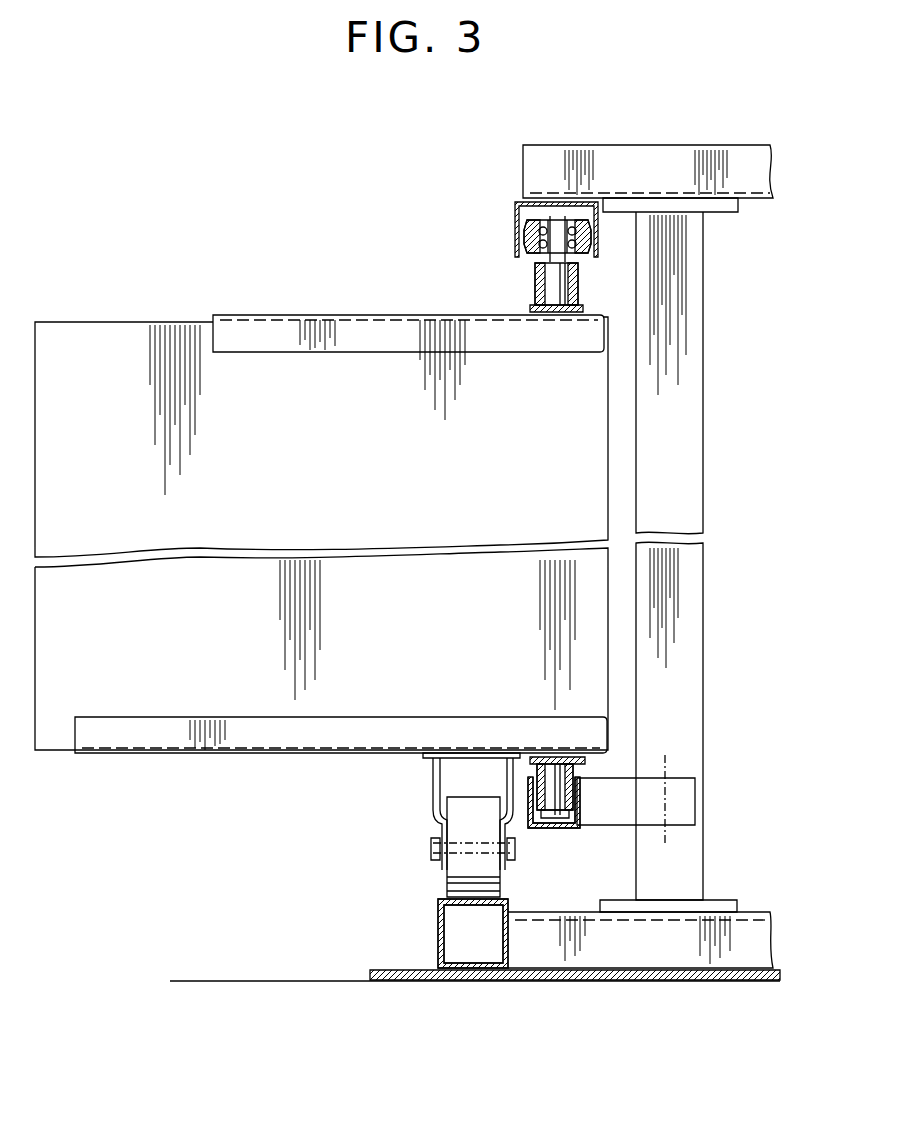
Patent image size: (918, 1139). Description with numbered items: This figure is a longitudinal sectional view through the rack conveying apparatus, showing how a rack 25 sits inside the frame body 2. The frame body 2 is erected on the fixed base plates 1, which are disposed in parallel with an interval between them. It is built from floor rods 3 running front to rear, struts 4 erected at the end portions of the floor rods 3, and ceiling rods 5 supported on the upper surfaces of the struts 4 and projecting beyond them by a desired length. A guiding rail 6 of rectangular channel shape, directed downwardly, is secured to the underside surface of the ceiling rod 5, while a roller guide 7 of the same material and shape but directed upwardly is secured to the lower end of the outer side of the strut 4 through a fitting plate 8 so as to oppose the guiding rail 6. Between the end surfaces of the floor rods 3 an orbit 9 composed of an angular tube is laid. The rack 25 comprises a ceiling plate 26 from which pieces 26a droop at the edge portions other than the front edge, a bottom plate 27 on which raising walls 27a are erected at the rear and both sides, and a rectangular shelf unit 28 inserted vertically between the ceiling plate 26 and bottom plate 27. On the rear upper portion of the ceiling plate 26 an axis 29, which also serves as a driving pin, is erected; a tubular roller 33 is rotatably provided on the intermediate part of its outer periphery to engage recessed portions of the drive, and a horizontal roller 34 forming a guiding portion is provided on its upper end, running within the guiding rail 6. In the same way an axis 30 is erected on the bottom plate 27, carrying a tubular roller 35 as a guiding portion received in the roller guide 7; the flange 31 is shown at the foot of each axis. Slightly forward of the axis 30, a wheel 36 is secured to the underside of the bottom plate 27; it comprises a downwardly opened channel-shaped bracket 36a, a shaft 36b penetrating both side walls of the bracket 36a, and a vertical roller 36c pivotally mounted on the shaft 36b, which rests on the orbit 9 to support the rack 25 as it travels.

The base plate 1 is at (372, 971).
The frame body 2 is at (512, 163).
The floor rod 3 is at (752, 911).
The strut 4 is at (704, 452).
The ceiling rod 5 is at (651, 147).
The guiding rail 6 is at (516, 215).
The roller guide 7 is at (551, 829).
The fitting plate 8 is at (678, 783).
The orbit 9 is at (438, 938).
The rack 25 is at (216, 306).
The ceiling plate 26 is at (286, 318).
The piece 26a is at (364, 342).
The bottom plate 27 is at (230, 756).
The raising wall 27a is at (353, 718).
The shelf unit 28 is at (109, 332).
The axis 29 is at (552, 292).
The axis 30 is at (553, 765).
The flange 31 is at (582, 310).
The tubular roller 33 is at (536, 278).
The horizontal roller 34 is at (526, 238).
The roller 35 is at (582, 800).
The wheel 36 is at (426, 829).
The bracket 36a is at (435, 788).
The shaft 36b is at (448, 845).
The vertical roller 36c is at (449, 878).